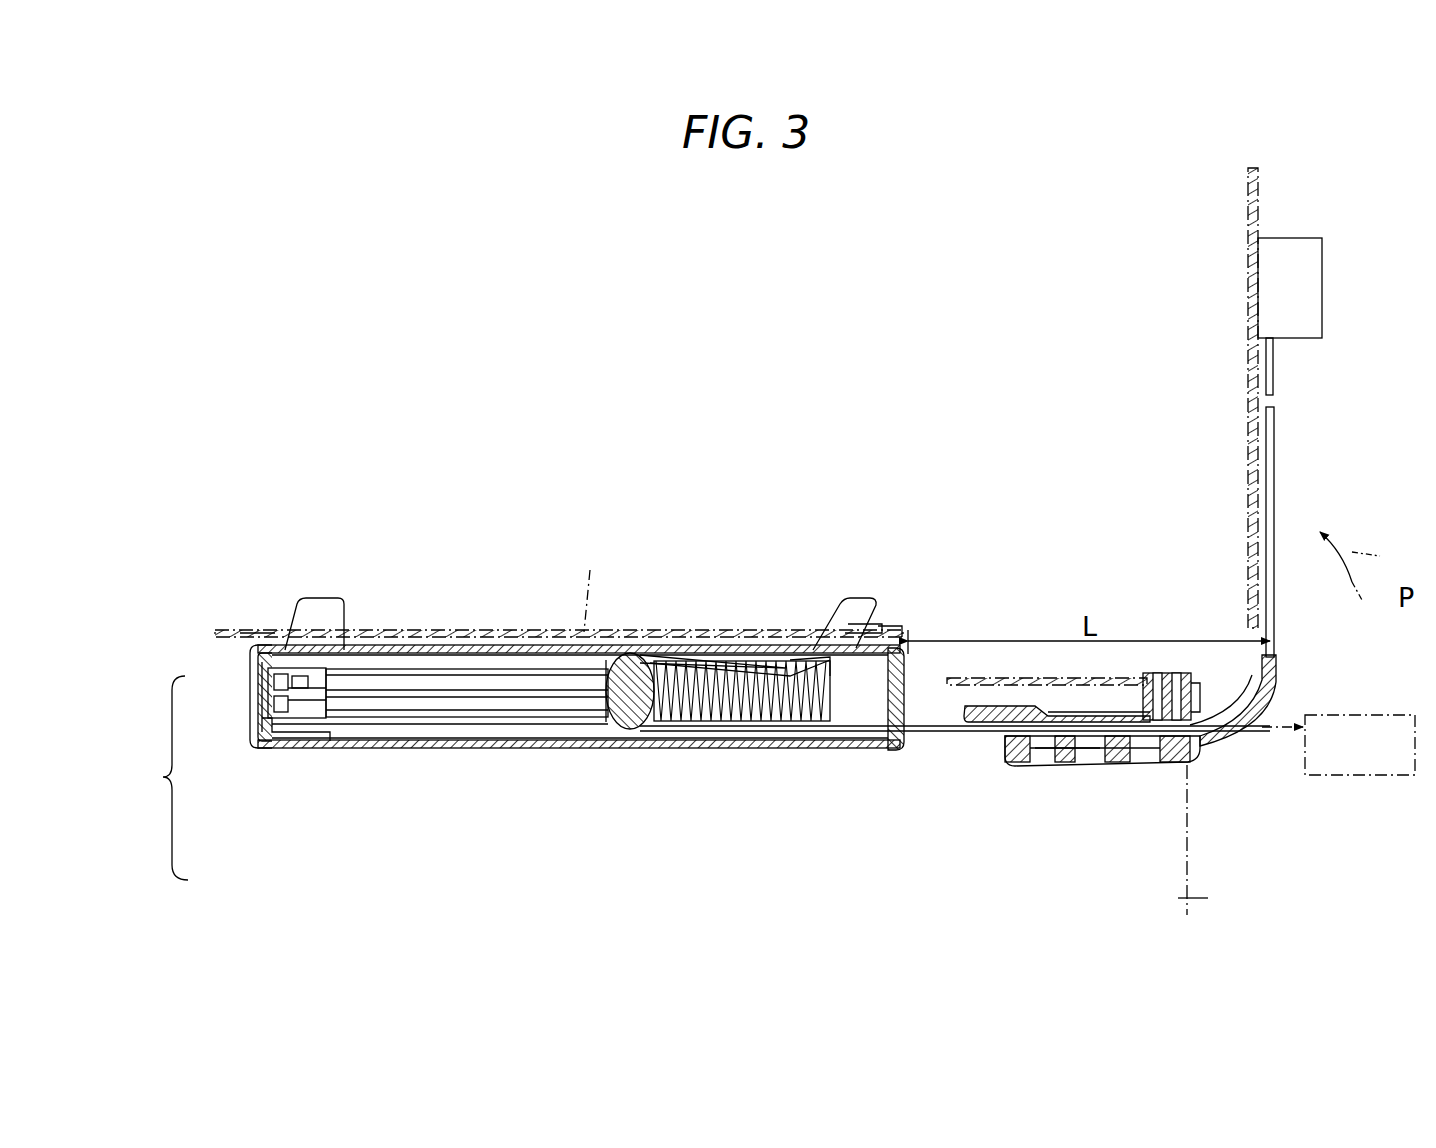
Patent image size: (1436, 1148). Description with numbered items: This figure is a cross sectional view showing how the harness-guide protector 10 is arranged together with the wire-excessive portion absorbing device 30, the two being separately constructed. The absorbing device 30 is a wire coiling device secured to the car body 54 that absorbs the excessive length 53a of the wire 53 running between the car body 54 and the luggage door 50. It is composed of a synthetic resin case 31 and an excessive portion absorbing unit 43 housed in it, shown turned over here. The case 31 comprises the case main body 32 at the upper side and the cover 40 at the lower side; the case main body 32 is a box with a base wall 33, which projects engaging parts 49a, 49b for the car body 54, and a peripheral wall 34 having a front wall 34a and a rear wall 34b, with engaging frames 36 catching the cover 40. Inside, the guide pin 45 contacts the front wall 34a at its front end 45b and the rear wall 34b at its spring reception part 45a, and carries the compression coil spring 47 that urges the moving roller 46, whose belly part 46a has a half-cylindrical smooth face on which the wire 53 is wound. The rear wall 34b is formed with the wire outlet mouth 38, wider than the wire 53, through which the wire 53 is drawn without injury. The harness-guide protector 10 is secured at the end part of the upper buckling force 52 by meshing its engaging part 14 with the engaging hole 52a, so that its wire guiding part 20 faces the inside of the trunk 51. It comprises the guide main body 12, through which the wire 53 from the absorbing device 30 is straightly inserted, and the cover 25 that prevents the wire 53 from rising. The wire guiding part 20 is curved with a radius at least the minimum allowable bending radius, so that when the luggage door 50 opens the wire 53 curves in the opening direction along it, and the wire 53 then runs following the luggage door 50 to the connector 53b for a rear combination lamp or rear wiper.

The harness-guide protector 10 is at (1125, 768).
The guide main body 12 is at (986, 726).
The engaging part 14 is at (1186, 672).
The wire guiding part 20 is at (1278, 657).
The cover 25 is at (1058, 768).
The wire-excessive portion absorbing device 30 is at (480, 754).
The case 31 is at (164, 778).
The case main body 32 is at (250, 678).
The base wall 33 is at (459, 640).
The peripheral wall 34 is at (243, 648).
The front wall 34a is at (258, 700).
The rear wall 34b is at (906, 658).
The engaging frame 36 is at (255, 695).
The wire outlet mouth 38 is at (910, 742).
The cover 40 is at (338, 754).
The excessive portion absorbing unit 43 is at (581, 732).
The guide pin 45 is at (424, 700).
The spring reception part 45a is at (882, 648).
The front end 45b is at (274, 648).
The moving roller 46 is at (636, 732).
The belly part 46a is at (641, 655).
The compression coil spring 47 is at (742, 722).
The engaging part 49a is at (856, 598).
The engaging part 49b is at (319, 606).
The luggage door 50 is at (1248, 390).
The trunk 51 is at (1188, 898).
The upper buckling force 52 is at (951, 690).
The engaging hole 52a is at (1161, 672).
The wire 53 is at (1274, 482).
The excessive length 53a is at (790, 736).
The connector 53b is at (1322, 290).
The car body 54 is at (593, 585).